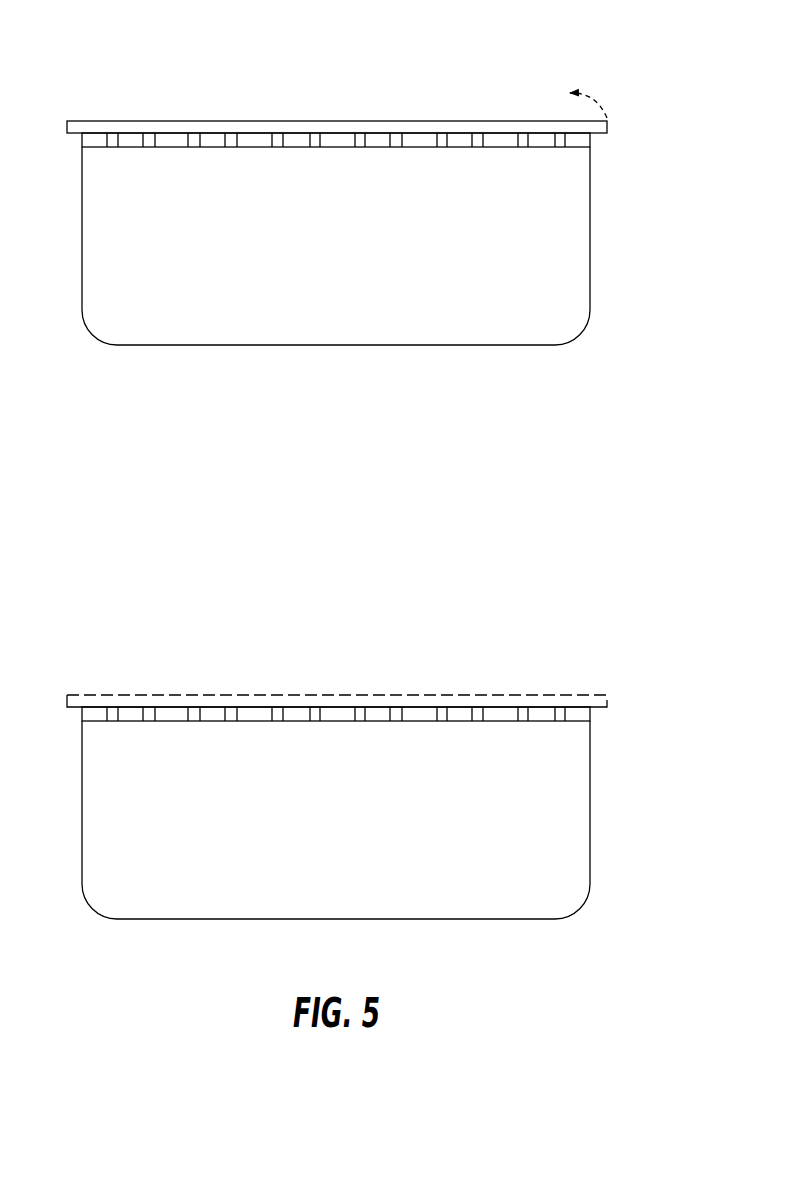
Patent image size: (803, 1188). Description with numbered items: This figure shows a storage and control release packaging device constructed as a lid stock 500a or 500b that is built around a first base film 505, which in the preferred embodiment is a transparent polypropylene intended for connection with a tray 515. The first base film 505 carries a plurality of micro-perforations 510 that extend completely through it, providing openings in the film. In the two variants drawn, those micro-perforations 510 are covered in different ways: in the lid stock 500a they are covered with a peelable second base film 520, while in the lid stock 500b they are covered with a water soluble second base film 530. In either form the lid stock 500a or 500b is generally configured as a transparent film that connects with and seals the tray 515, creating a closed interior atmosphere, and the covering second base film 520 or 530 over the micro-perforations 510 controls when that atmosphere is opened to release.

The lid stock 500a is at (336, 100).
The lid stock 500b is at (336, 675).
The first base film 505 is at (172, 148).
The micro-perforations 510 is at (275, 148).
The tray 515 is at (590, 228).
The peelable second base film 520 is at (168, 120).
The water soluble second base film 530 is at (166, 695).